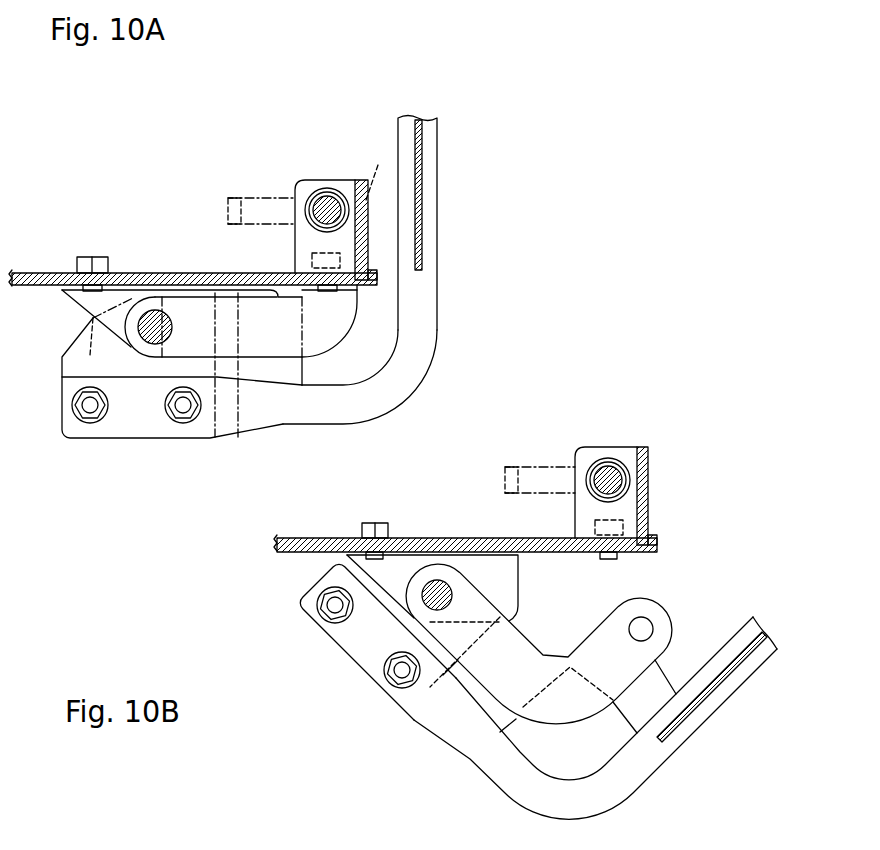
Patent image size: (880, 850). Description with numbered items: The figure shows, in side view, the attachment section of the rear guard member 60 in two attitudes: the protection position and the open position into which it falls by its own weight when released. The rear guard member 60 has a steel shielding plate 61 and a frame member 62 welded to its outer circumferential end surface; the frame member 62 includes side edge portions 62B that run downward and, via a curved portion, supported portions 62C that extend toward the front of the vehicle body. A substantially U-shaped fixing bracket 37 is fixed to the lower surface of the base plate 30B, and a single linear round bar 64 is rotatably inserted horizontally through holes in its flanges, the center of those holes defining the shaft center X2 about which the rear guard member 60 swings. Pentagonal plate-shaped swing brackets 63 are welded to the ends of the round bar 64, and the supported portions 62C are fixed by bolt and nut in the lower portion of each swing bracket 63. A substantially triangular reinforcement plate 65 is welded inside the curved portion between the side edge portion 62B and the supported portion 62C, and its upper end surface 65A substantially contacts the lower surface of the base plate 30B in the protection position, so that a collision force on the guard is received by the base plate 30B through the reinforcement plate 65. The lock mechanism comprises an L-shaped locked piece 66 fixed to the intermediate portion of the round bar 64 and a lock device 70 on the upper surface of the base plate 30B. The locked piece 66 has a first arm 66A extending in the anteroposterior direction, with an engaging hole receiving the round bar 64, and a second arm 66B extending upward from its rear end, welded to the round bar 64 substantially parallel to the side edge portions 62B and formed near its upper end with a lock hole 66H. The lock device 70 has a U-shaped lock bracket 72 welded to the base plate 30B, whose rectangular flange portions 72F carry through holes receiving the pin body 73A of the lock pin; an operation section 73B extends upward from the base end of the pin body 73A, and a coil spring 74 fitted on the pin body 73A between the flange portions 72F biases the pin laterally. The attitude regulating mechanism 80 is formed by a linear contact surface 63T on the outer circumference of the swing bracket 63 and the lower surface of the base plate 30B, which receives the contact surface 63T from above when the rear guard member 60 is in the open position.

In FIG. 10A, the base plate 30B is at (42, 268).
In FIG. 10B, the base plate 30B is at (418, 537).
In FIG. 10A, the fixing bracket 37 is at (104, 339).
In FIG. 10B, the fixing bracket 37 is at (523, 577).
In FIG. 10A, the rear guard member 60 is at (454, 181).
In FIG. 10B, the rear guard member 60 is at (724, 748).
In FIG. 10A, the shielding plate 61 is at (423, 147).
In FIG. 10B, the shielding plate 61 is at (723, 672).
In FIG. 10A, the frame member 62 is at (440, 294).
In FIG. 10B, the frame member 62 is at (674, 762).
In FIG. 10A, the side edge portion 62B is at (440, 208).
In FIG. 10B, the side edge portion 62B is at (747, 684).
In FIG. 10A, the supported portion 62C is at (250, 433).
In FIG. 10B, the supported portion 62C is at (436, 728).
In FIG. 10A, the swing bracket 63 is at (137, 440).
In FIG. 10B, the swing bracket 63 is at (334, 663).
In FIG. 10A, the linear contact surface 63T is at (75, 337).
In FIG. 10B, the linear contact surface 63T is at (432, 588).
In FIG. 10A, the round bar 64 is at (153, 307).
In FIG. 10B, the round bar 64 is at (450, 588).
In FIG. 10A, the reinforcement plate 65 is at (343, 367).
In FIG. 10B, the reinforcement plate 65 is at (537, 755).
In FIG. 10A, the upper end surface 65A is at (350, 243).
In FIG. 10B, the upper end surface 65A is at (593, 682).
In FIG. 10A, the locked piece 66 is at (352, 320).
In FIG. 10B, the locked piece 66 is at (667, 606).
In FIG. 10A, the first arm 66A is at (250, 350).
In FIG. 10B, the first arm 66A is at (414, 707).
In FIG. 10A, the second arm 66B is at (374, 172).
In FIG. 10B, the second arm 66B is at (641, 702).
In FIG. 10B, the lock hole 66H is at (639, 618).
In FIG. 10A, the lock device 70 is at (277, 162).
In FIG. 10B, the lock device 70 is at (702, 452).
In FIG. 10A, the lock bracket 72 is at (347, 176).
In FIG. 10B, the lock bracket 72 is at (651, 482).
In FIG. 10A, the flange portion 72F is at (293, 210).
In FIG. 10B, the flange portion 72F is at (618, 446).
In FIG. 10A, the pin body 73A is at (320, 190).
In FIG. 10B, the pin body 73A is at (603, 457).
In FIG. 10A, the operation section 73B is at (227, 213).
In FIG. 10B, the operation section 73B is at (513, 467).
In FIG. 10A, the coil spring 74 is at (315, 229).
In FIG. 10B, the coil spring 74 is at (592, 497).
In FIG. 10A, the attitude regulating mechanism 80 is at (52, 345).
In FIG. 10B, the attitude regulating mechanism 80 is at (325, 557).
In FIG. 10A, the shaft center X2 is at (131, 402).
In FIG. 10B, the shaft center X2 is at (368, 639).